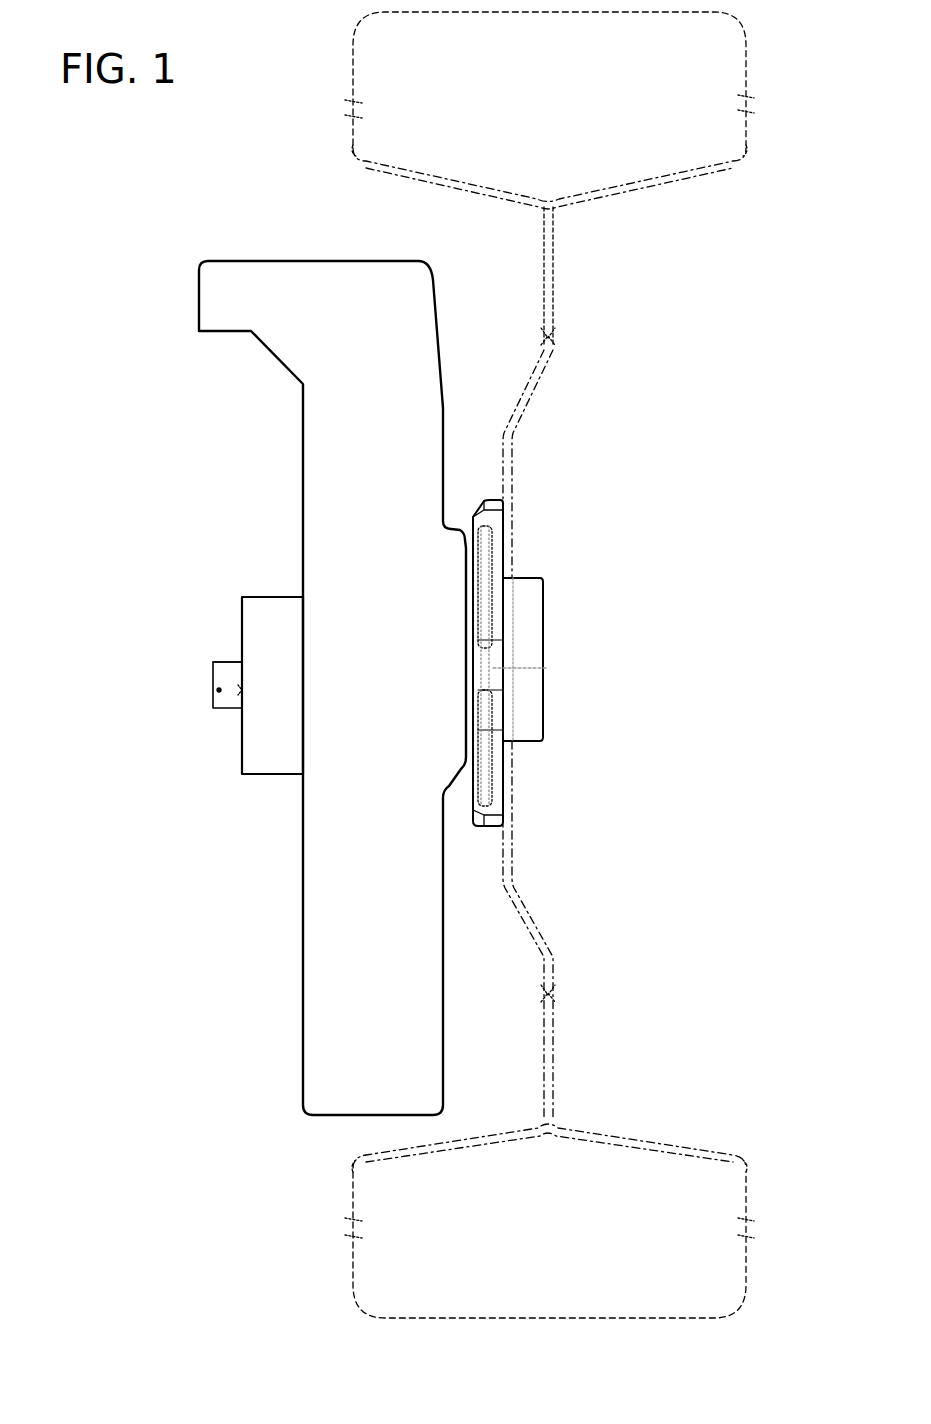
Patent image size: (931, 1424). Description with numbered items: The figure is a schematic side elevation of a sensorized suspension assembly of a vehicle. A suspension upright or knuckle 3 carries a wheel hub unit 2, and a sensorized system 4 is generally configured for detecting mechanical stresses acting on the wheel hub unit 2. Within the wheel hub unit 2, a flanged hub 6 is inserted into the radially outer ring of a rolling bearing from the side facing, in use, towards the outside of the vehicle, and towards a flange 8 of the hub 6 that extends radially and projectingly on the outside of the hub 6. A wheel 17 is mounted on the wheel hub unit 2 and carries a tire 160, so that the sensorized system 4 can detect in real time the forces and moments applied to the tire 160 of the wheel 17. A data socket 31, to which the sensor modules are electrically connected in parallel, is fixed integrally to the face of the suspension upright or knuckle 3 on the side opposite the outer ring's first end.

The tire 160 is at (356, 64).
The wheel 17 is at (640, 186).
The suspension upright or knuckle 3 is at (242, 271).
The data socket 31 is at (211, 659).
The sensorized system 4 is at (219, 712).
The flange 8 is at (493, 518).
The flanged hub 6 is at (489, 585).
The wheel hub unit 2 is at (507, 750).